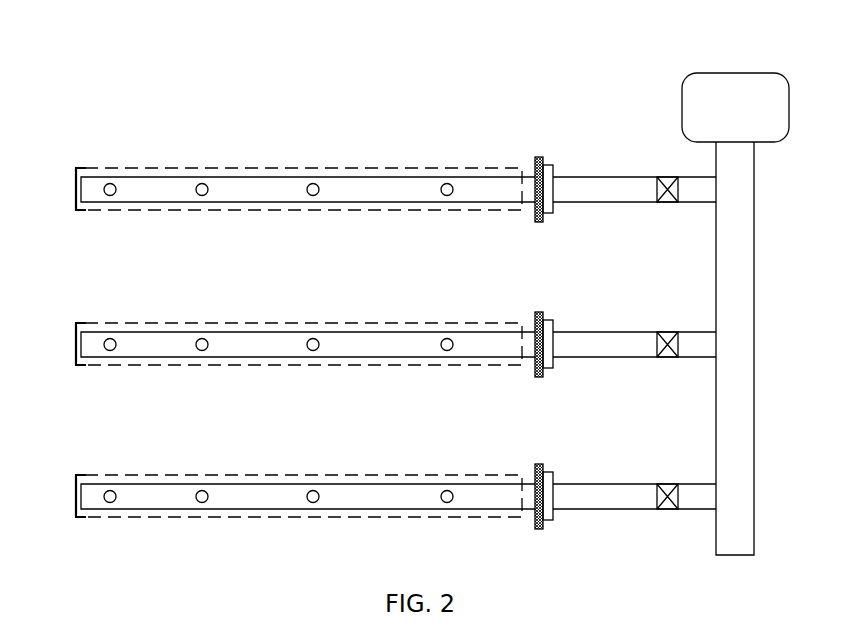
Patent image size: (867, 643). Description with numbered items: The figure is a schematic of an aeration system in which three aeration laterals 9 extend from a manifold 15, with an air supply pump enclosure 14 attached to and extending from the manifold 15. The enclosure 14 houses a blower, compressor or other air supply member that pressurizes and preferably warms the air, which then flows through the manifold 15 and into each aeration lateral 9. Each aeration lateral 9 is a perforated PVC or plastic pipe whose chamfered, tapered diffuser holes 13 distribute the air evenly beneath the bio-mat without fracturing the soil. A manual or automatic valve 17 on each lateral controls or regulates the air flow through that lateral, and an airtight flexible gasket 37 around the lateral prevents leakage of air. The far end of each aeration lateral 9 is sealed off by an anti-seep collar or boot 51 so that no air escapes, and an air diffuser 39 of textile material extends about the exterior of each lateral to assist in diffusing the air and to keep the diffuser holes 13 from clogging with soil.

The aeration lateral 9 is at (76, 189).
The diffuser hole 13 is at (110, 196).
The air supply pump enclosure 14 is at (731, 73).
The manifold 15 is at (754, 343).
The valve 17 is at (661, 177).
The gasket 37 is at (538, 222).
The air diffuser 39 is at (202, 168).
The anti-seep collar or boot 51 is at (546, 165).